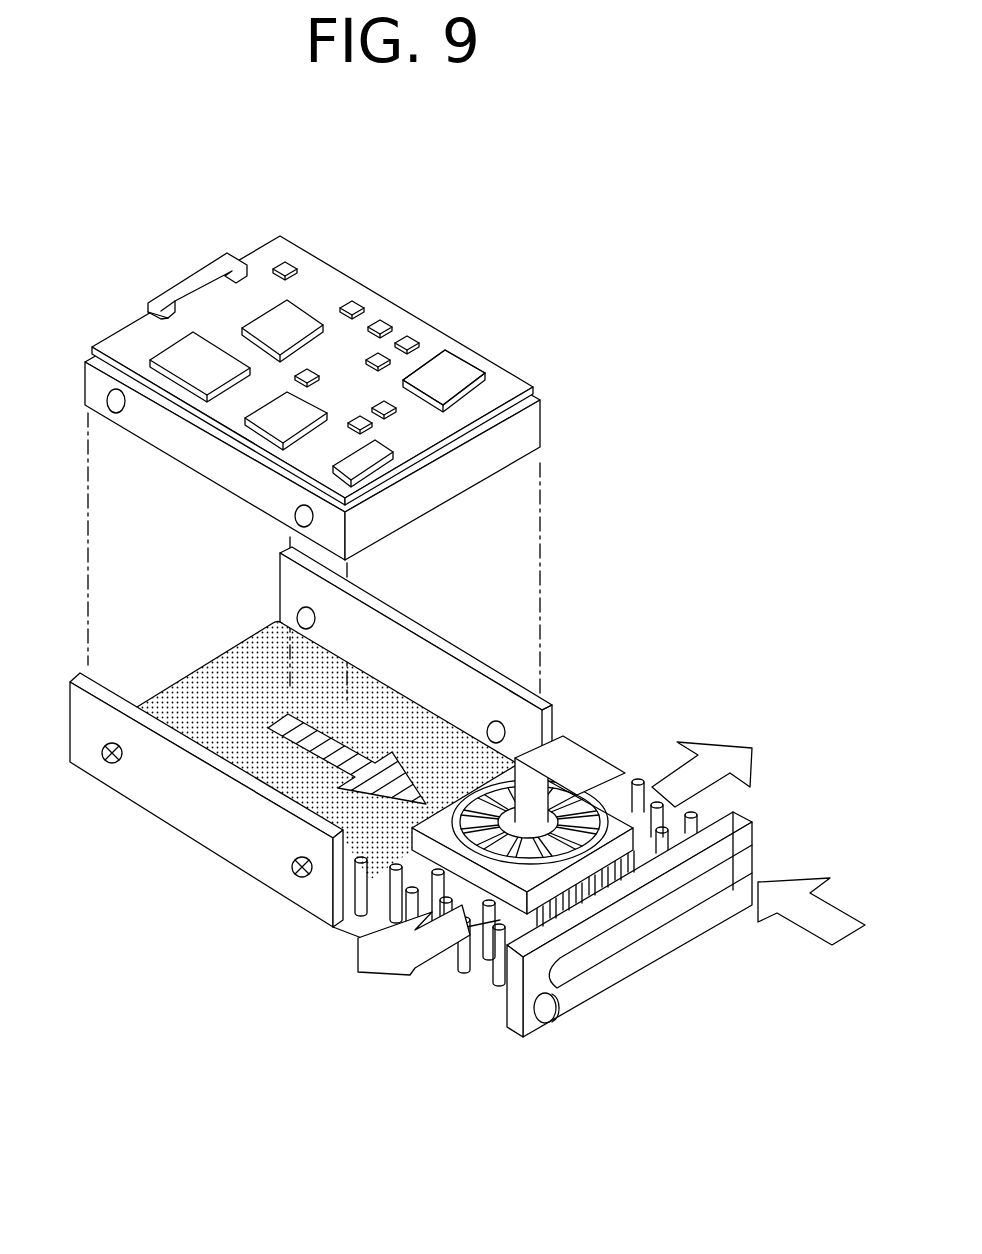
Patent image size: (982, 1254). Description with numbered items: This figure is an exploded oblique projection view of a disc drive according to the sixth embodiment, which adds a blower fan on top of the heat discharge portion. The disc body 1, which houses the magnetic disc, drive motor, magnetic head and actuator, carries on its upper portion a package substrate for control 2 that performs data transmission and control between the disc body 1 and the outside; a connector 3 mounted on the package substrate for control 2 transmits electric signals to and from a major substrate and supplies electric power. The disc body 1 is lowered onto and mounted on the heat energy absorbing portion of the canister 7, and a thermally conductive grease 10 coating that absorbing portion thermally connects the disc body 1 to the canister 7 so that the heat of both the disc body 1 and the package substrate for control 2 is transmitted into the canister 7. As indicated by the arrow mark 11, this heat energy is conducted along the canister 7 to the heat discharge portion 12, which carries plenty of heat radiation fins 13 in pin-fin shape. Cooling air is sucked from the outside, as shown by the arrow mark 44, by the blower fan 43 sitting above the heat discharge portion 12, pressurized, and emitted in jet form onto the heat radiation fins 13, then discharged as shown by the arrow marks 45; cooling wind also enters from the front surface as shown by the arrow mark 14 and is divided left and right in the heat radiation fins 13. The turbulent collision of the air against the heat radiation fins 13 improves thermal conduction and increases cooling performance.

The disc body 1 is at (527, 425).
The package substrate for control 2 is at (460, 372).
The connector 3 is at (180, 270).
The canister 7 is at (185, 803).
The thermally conductive grease 10 is at (213, 687).
The arrow mark 11 is at (363, 770).
The heat discharge portion 12 is at (338, 922).
The heat radiation fins 13 is at (463, 958).
The arrow mark 14 is at (813, 917).
The blower fan 43 is at (585, 868).
The arrow mark 44 is at (557, 760).
The arrow mark 45 is at (727, 755).